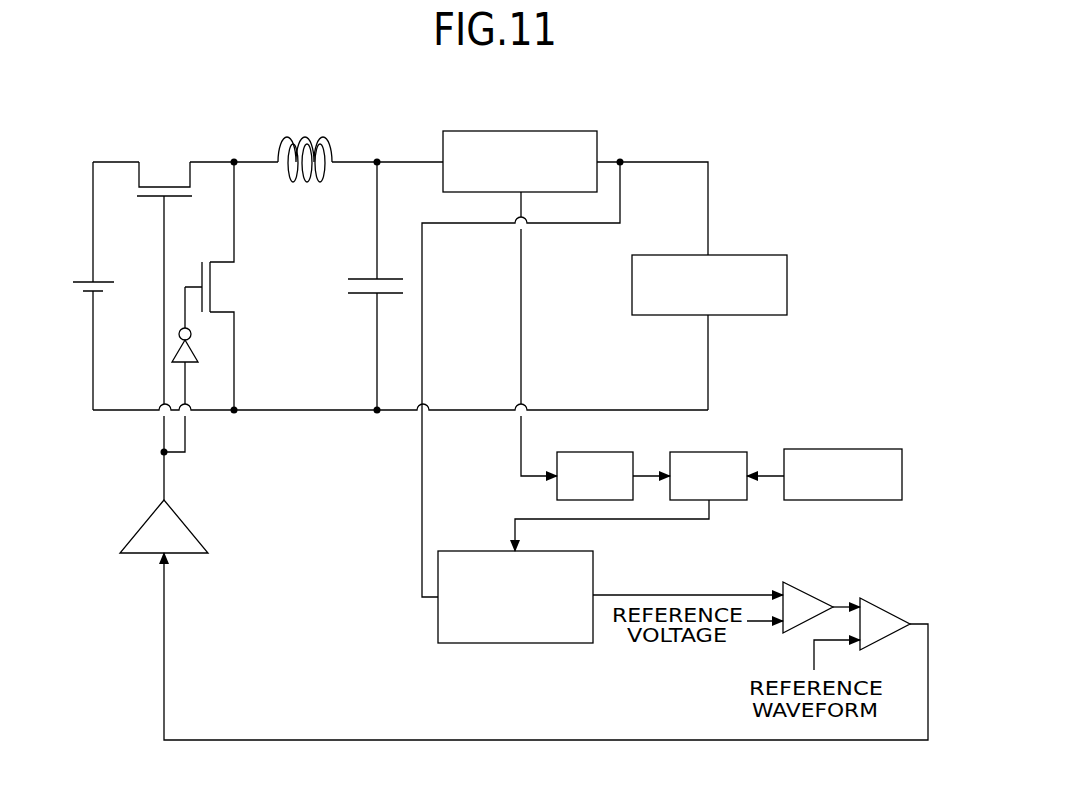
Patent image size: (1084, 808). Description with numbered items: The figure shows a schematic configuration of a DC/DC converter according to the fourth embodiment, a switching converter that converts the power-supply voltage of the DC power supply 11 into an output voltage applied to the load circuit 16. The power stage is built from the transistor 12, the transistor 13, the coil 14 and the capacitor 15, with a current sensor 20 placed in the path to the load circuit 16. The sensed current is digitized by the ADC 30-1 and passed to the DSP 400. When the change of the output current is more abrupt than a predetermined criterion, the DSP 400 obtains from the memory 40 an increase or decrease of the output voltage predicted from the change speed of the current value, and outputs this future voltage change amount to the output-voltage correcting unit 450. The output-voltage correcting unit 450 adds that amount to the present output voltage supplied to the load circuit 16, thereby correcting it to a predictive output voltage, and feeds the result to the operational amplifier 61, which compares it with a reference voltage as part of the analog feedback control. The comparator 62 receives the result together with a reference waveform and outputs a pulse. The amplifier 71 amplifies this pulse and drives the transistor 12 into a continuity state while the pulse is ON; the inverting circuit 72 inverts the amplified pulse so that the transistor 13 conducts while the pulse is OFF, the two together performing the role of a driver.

The DC power supply 11 is at (107, 277).
The transistor 12 is at (164, 165).
The transistor 13 is at (230, 282).
The coil 14 is at (315, 134).
The capacitor 15 is at (363, 274).
The load circuit 16 is at (742, 255).
The current sensor 20 is at (522, 131).
The Analogue Digital Converter (ADC) 30-1 is at (591, 457).
The memory 40 is at (854, 454).
The DSP 400 is at (706, 455).
The output-voltage correcting unit 450 is at (547, 557).
The operational amplifier 61 is at (782, 588).
The comparator 62 is at (862, 603).
The amplifier 71 is at (196, 510).
The inverting circuit 72 is at (200, 350).